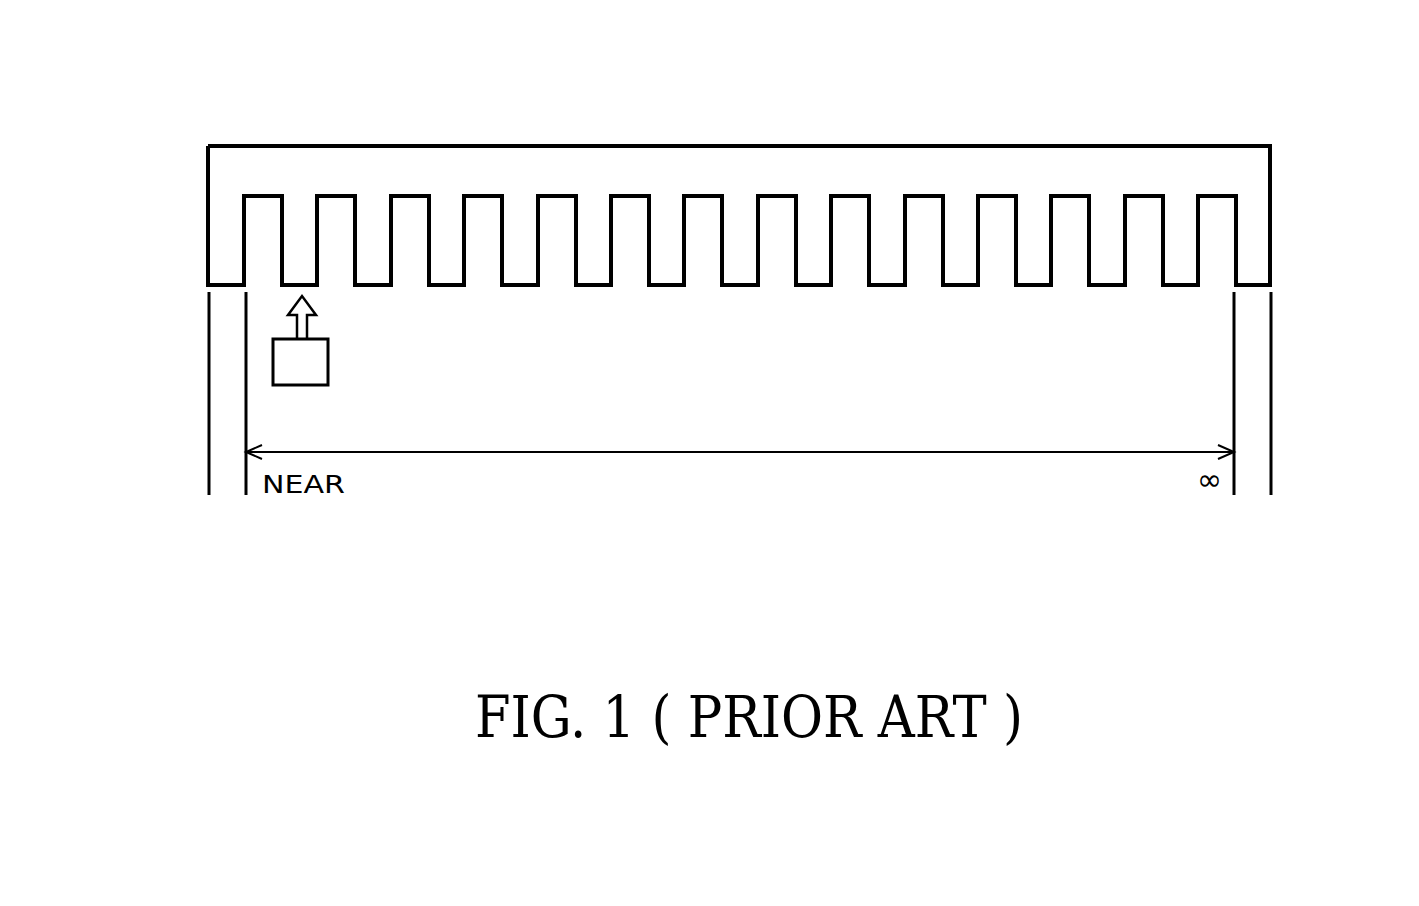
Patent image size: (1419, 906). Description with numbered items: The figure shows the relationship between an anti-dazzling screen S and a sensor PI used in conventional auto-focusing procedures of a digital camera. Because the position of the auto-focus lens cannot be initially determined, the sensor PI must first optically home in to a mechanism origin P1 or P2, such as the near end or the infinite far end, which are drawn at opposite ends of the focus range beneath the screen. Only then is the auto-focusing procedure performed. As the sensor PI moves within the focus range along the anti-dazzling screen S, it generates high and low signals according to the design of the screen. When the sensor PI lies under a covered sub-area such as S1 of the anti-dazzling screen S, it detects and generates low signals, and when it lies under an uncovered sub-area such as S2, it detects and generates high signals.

The anti-dazzling screen S is at (740, 146).
The covered sub-area S1 is at (740, 264).
The uncovered sub-area S2 is at (775, 198).
The mechanism origin P1 is at (1272, 440).
The mechanism origin P2 is at (209, 437).
The sensor PI is at (300, 340).